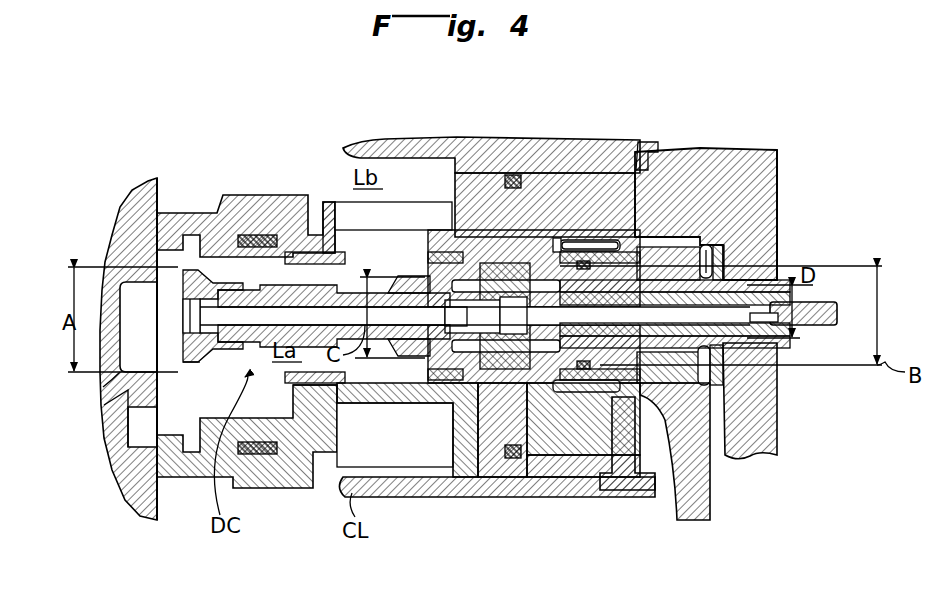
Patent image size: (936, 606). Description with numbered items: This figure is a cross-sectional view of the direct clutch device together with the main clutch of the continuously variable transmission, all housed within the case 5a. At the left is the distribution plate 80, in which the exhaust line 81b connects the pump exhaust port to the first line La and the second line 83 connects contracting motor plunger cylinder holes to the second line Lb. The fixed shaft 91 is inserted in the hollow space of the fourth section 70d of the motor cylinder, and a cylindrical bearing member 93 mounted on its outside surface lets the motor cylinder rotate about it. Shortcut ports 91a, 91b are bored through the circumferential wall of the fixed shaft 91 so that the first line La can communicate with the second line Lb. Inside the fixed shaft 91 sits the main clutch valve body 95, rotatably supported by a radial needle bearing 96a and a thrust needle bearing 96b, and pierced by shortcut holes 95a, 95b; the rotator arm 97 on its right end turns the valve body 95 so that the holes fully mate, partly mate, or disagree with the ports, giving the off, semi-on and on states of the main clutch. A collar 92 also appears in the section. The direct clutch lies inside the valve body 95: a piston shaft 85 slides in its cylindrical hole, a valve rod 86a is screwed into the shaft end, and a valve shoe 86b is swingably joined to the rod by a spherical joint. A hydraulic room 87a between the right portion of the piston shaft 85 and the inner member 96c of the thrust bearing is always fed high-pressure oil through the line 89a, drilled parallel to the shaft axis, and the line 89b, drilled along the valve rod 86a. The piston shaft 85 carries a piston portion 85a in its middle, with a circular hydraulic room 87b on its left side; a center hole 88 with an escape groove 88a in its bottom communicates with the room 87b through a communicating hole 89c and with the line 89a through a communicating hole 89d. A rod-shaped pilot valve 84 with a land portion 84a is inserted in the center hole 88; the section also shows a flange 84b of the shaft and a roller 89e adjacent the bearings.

The distribution plate 80 is at (125, 228).
The second line 83 is at (107, 463).
The exhaust line 81b is at (103, 387).
The collar 92 is at (243, 207).
The main clutch valve body 95 is at (285, 374).
The shortcut hole 95a is at (357, 250).
The shortcut hole 95b is at (350, 378).
The fourth section 70d is at (576, 136).
The fixed shaft 91 is at (462, 165).
The shortcut port 91a is at (417, 235).
The shortcut port 91b is at (423, 385).
The line 89a is at (478, 290).
The radial needle bearing 96a is at (540, 172).
The cylindrical bearing member 93 is at (642, 146).
The land portion 84a is at (514, 280).
The piston portion 85a is at (593, 247).
The communicating hole 89d is at (641, 230).
The case 5a is at (765, 196).
The hydraulic room 87a is at (668, 240).
The thrust needle bearing 96b is at (723, 251).
The roller bearing 89e is at (772, 343).
The inner member 96c is at (683, 392).
The rotator arm 97 is at (707, 491).
The shaft flange 84b is at (610, 478).
The escape groove 88a is at (465, 430).
The communicating hole 89c is at (542, 395).
The circular hydraulic room 87b is at (550, 470).
The center hole 88 is at (509, 460).
The piston shaft 85 is at (455, 340).
The line 89b is at (273, 318).
The valve rod 86a is at (346, 287).
The valve shoe 86b is at (183, 340).
The pilot valve 84 is at (836, 300).